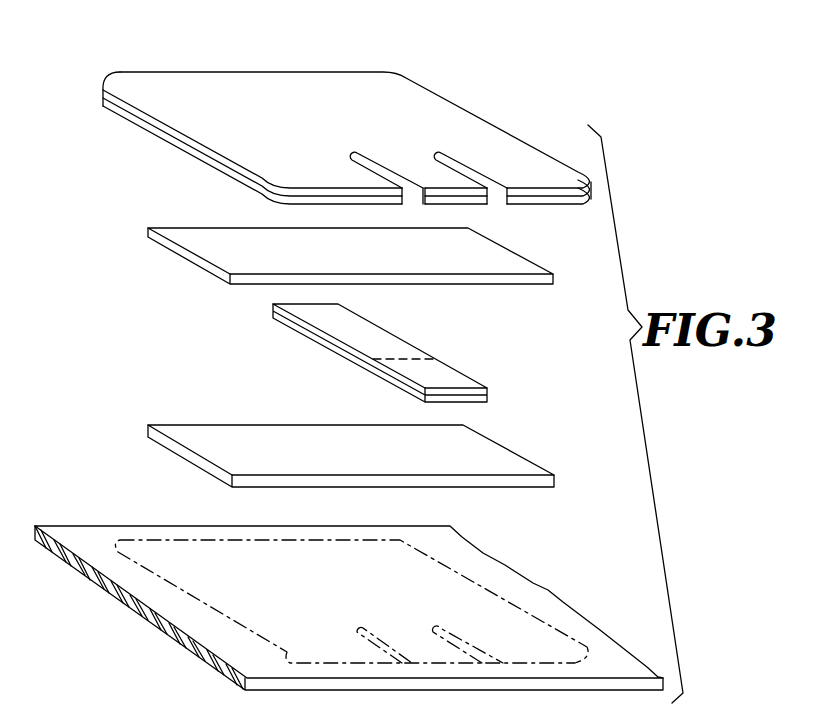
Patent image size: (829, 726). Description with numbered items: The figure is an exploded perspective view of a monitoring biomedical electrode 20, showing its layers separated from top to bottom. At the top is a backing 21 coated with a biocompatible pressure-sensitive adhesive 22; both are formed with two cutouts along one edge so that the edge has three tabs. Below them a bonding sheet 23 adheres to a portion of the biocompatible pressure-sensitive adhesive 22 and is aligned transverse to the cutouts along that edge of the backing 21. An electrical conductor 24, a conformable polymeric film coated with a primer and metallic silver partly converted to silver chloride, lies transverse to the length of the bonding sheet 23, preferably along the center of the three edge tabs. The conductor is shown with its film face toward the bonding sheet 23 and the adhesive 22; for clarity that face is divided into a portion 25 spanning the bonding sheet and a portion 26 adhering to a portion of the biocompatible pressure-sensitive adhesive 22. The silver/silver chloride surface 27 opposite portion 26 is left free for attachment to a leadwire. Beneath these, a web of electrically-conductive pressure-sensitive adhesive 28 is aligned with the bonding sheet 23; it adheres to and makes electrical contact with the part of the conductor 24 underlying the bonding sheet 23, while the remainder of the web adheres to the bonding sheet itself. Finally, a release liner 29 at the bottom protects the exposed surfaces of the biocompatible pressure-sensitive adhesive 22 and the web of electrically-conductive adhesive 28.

The monitoring biomedical electrode 20 is at (158, 56).
The backing 21 is at (262, 87).
The biocompatible pressure-sensitive adhesive 22 is at (182, 143).
The bonding sheet 23 is at (170, 227).
The electrical conductor 24 is at (266, 322).
The portion of conductor film face spanning the bonding sheet 25 is at (365, 328).
The portion of conductor film face adhering to biocompatible PSA 26 is at (438, 365).
The silver/silver chloride surface 27 is at (385, 380).
The web of electrically-conductive pressure-sensitive adhesive 28 is at (180, 428).
The release liner 29 is at (105, 528).